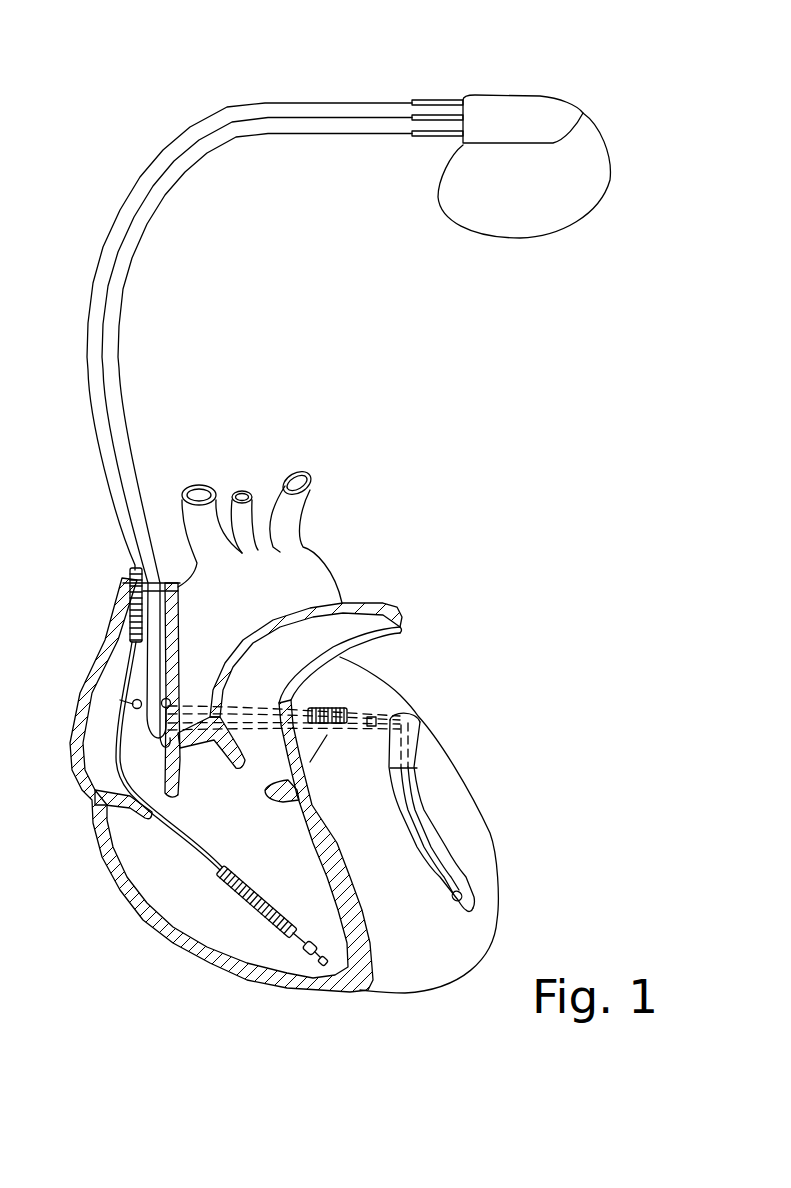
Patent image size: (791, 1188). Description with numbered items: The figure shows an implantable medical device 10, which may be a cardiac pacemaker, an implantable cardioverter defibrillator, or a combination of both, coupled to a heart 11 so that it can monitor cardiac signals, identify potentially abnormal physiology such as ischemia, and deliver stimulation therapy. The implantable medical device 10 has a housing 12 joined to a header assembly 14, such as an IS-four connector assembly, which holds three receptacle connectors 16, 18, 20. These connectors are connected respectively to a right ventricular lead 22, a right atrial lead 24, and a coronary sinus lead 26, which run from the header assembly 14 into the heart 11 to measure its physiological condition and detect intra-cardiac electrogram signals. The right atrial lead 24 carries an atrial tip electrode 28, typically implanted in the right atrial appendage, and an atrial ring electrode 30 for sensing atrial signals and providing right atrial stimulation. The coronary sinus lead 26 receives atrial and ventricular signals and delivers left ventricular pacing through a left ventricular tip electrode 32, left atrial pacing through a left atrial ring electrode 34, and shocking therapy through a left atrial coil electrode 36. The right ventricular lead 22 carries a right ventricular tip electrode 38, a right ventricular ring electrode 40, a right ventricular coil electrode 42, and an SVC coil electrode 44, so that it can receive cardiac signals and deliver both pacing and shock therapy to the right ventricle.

The implantable medical device 10 is at (636, 65).
The heart 11 is at (467, 950).
The housing 12 is at (590, 152).
The header assembly 14 is at (545, 95).
The receptacle connector 16 is at (417, 100).
The receptacle connector 18 is at (433, 115).
The receptacle connector 20 is at (447, 131).
The right ventricular lead 22 is at (347, 103).
The right atrial lead 24 is at (297, 117).
The coronary sinus lead 26 is at (260, 133).
The atrial tip electrode 28 is at (171, 702).
The atrial ring electrode 30 is at (132, 704).
The left ventricular tip electrode 32 is at (473, 898).
The left atrial ring electrode 34 is at (377, 716).
The left atrial coil electrode 36 is at (333, 712).
The right ventricular tip electrode 38 is at (324, 966).
The right ventricular ring electrode 40 is at (302, 955).
The right ventricular coil electrode 42 is at (265, 915).
The SVC coil electrode 44 is at (130, 568).